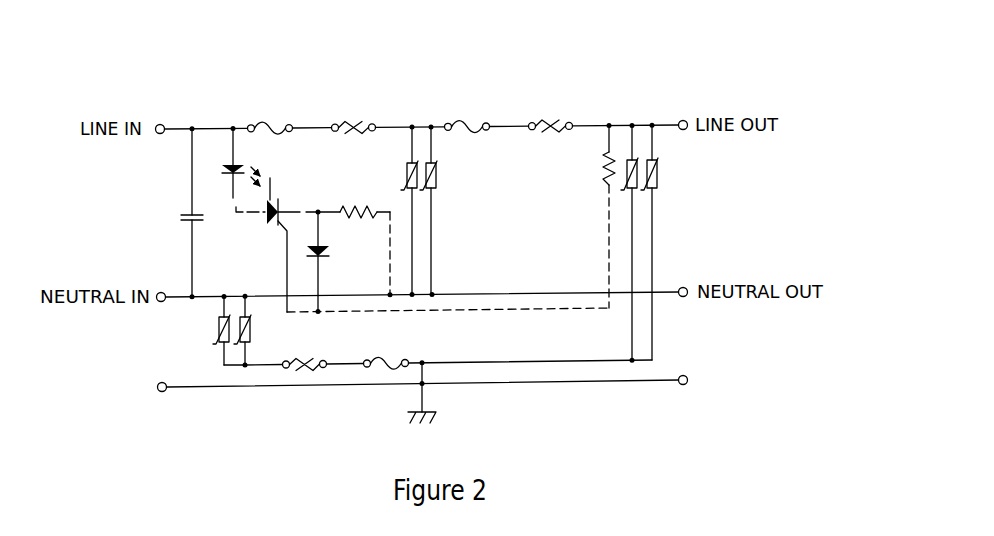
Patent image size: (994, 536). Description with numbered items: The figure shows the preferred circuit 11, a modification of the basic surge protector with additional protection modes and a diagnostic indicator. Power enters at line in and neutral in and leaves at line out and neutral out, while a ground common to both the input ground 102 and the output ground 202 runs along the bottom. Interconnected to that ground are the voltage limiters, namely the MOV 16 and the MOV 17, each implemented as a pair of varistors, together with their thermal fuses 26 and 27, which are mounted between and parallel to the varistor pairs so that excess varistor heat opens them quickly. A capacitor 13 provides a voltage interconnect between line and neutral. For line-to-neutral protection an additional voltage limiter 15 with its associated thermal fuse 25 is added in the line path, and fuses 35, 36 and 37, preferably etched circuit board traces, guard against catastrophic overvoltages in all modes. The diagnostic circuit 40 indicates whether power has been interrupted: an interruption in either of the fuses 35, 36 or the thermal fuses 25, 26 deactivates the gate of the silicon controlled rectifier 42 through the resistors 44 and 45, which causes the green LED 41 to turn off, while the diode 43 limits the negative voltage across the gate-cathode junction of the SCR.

The fuse 35 is at (276, 80).
The thermal fuse 25 is at (358, 85).
The fuse 36 is at (468, 82).
The thermal fuse 26 is at (550, 82).
The capacitor 13 is at (177, 216).
The diagnostic circuit 40 is at (312, 177).
The green LED 41 is at (222, 168).
The silicon controlled rectifier 42 is at (277, 230).
The resistor 44 is at (358, 203).
The diode 43 is at (335, 252).
The voltage limiter 15 is at (418, 197).
The resistor 45 is at (598, 172).
The MOV 16 is at (725, 172).
The preferred circuit 11 is at (186, 339).
The MOV 17 is at (218, 347).
The thermal fuse 27 is at (308, 393).
The fuse 37 is at (392, 393).
The input ground 102 is at (60, 387).
The output ground 202 is at (795, 380).